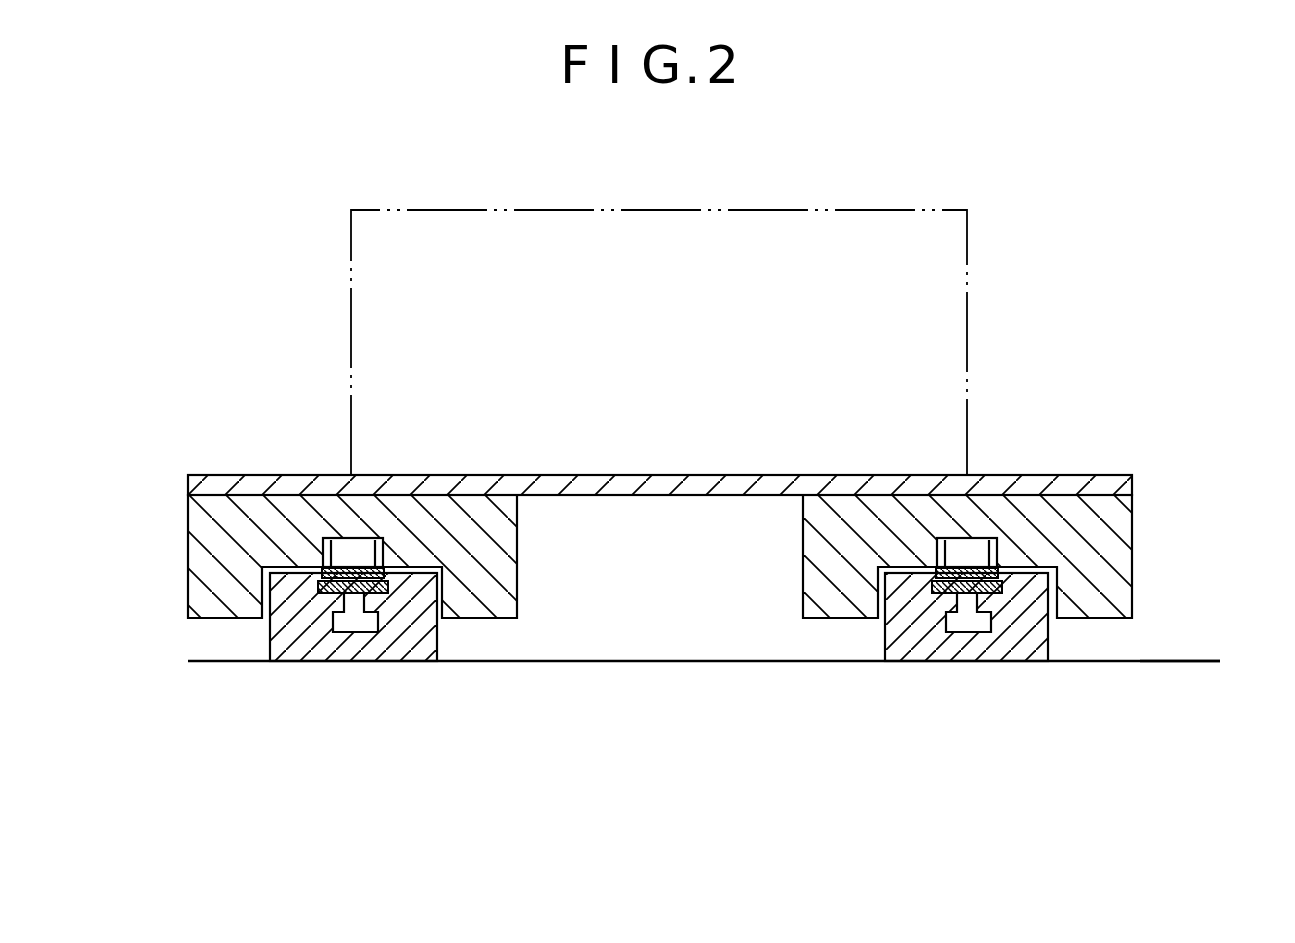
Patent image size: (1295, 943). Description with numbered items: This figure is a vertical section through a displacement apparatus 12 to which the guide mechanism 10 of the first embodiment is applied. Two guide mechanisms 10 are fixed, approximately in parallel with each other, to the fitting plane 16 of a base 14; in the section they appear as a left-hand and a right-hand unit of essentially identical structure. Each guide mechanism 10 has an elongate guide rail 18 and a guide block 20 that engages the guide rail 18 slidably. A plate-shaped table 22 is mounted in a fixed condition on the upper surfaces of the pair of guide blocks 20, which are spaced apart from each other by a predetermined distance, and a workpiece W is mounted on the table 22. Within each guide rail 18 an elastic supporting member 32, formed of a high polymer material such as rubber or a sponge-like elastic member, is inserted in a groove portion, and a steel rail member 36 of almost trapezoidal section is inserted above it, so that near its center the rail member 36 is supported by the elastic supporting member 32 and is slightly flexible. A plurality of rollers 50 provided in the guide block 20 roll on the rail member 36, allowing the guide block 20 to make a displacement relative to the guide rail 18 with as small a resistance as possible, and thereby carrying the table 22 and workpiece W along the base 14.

The workpiece W is at (425, 250).
The displacement apparatus 12 is at (1002, 163).
The guide mechanism 10 is at (178, 500).
The base 14 is at (1200, 660).
The fitting plane 16 is at (1167, 660).
The guide rail 18 is at (417, 637).
The guide block 20 is at (433, 518).
The table 22 is at (793, 478).
The elastic supporting member 32 is at (352, 638).
The rail member 36 is at (330, 568).
The rollers 50 is at (352, 540).